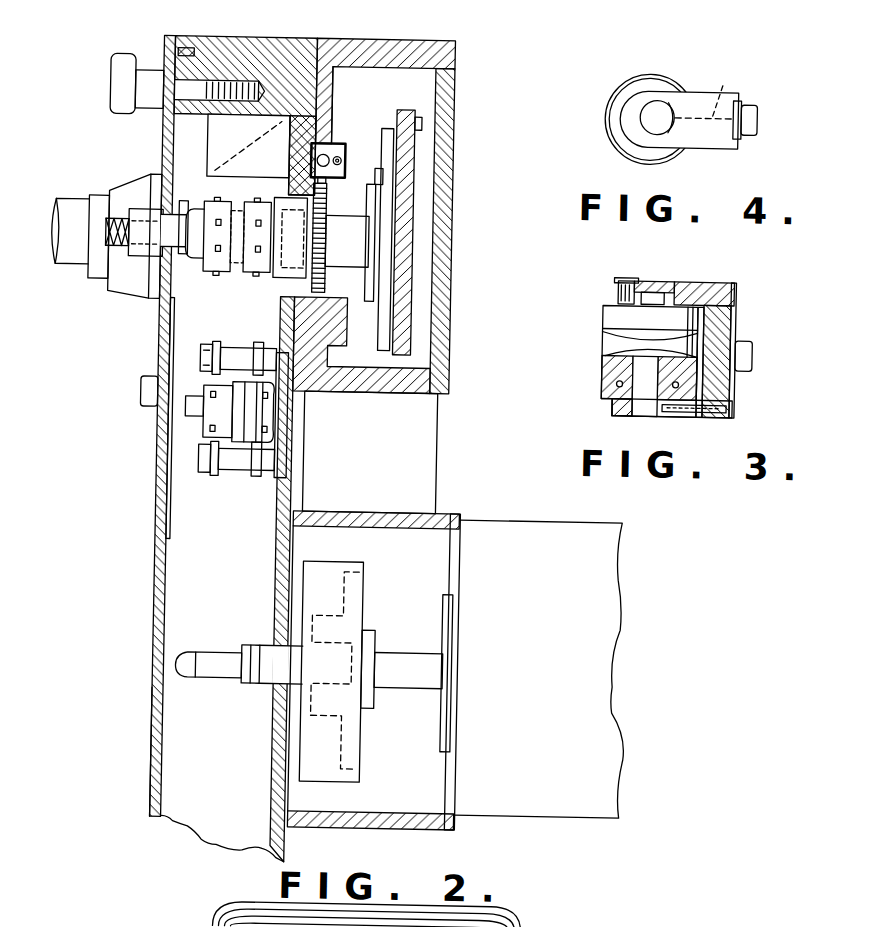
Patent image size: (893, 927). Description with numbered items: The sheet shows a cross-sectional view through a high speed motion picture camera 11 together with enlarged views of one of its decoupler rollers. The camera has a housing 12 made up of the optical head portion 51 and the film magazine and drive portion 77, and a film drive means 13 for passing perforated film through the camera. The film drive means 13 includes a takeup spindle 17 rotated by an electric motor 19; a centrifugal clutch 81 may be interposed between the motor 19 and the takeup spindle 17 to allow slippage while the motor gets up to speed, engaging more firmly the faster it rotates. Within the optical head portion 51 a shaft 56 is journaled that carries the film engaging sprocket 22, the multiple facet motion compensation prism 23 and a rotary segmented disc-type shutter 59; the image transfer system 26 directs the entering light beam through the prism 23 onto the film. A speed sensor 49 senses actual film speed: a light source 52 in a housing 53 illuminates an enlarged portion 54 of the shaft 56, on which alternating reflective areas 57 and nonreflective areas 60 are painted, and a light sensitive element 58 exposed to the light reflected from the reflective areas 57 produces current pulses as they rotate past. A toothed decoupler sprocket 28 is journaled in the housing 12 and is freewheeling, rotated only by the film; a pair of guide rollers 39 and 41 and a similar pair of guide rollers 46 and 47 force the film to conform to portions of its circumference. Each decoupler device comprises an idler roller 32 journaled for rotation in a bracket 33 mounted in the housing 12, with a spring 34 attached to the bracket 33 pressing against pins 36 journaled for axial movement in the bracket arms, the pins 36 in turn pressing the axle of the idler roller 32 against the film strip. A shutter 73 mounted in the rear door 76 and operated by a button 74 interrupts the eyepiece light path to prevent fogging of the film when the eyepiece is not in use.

In FIG. 2, the high speed motion picture camera 11 is at (77, 50).
In FIG. 2, the housing 12 is at (158, 560).
In FIG. 2, the film drive means 13 is at (486, 501).
In FIG. 2, the takeup spindle 17 is at (217, 682).
In FIG. 2, the electric motor 19 is at (623, 579).
In FIG. 2, the film engaging sprocket 22 is at (205, 204).
In FIG. 2, the prism 23 is at (351, 279).
In FIG. 2, the image transfer system 26 is at (206, 137).
In FIG. 2, the toothed decoupler sprocket 28 is at (205, 427).
In FIG. 4, the idler roller 32 is at (610, 137).
In FIG. 3, the idler roller 32 is at (605, 346).
In FIG. 4, the bracket 33 is at (718, 150).
In FIG. 3, the bracket 33 is at (725, 285).
In FIG. 4, the spring 34 is at (745, 100).
In FIG. 3, the spring 34 is at (738, 312).
In FIG. 4, the pins 36 is at (726, 90).
In FIG. 3, the pins 36 is at (700, 302).
In FIG. 2, the guide roller 39 is at (205, 466).
In FIG. 2, the guide roller 41 is at (199, 357).
In FIG. 2, the guide roller 46 is at (205, 343).
In FIG. 2, the guide roller 47 is at (205, 450).
In FIG. 2, the speed sensor 49 is at (334, 142).
In FIG. 2, the optical head portion 51 is at (412, 41).
In FIG. 2, the light source 52 is at (336, 159).
In FIG. 2, the housing 53 is at (326, 145).
In FIG. 2, the enlarged portion 54 is at (320, 184).
In FIG. 2, the shaft 56 is at (243, 276).
In FIG. 2, the reflective areas 57 is at (324, 221).
In FIG. 2, the light sensitive element 58 is at (295, 156).
In FIG. 2, the shutter 59 is at (378, 165).
In FIG. 2, the nonreflective areas 60 is at (324, 245).
In FIG. 2, the shutter 73 is at (174, 520).
In FIG. 2, the button 74 is at (139, 395).
In FIG. 2, the rear door 76 is at (157, 706).
In FIG. 2, the film magazine and drive portion 77 is at (193, 830).
In FIG. 2, the centrifugal clutch 81 is at (367, 569).